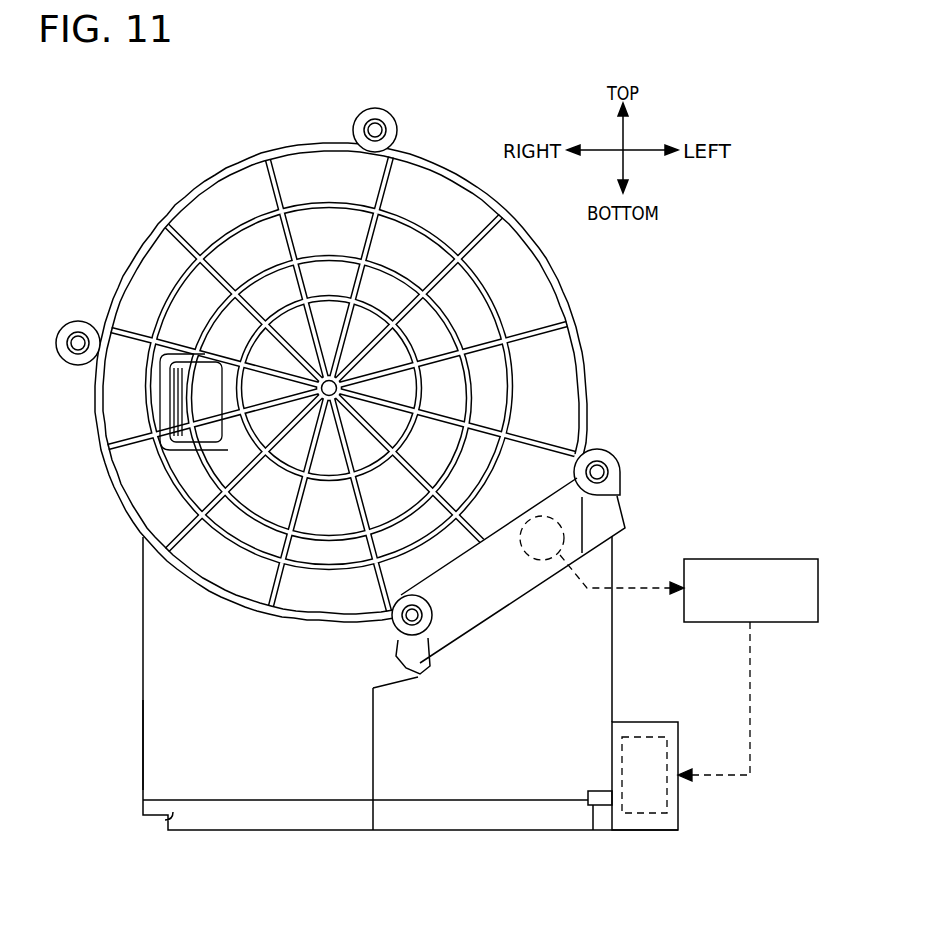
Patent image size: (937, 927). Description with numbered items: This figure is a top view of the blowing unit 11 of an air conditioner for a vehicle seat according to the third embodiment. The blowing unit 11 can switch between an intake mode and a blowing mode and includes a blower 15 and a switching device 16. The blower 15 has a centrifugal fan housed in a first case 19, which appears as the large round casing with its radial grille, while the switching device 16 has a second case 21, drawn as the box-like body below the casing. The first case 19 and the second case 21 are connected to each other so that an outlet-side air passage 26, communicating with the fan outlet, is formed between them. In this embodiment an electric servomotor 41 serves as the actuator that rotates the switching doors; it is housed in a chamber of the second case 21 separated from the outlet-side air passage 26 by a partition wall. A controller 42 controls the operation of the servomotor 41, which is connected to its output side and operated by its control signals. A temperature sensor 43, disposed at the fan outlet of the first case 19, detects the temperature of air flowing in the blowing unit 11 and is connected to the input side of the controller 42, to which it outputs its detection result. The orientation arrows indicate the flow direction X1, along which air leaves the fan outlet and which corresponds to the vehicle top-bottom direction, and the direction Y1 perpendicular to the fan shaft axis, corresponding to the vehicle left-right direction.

The blowing unit 11 is at (199, 140).
The blower 15 is at (126, 258).
The first case 19 is at (103, 302).
The switching device 16 is at (143, 680).
The second case 21 is at (140, 738).
The outlet-side air passage 26 is at (537, 652).
The electric servomotor 41 is at (655, 722).
The controller 42 is at (775, 559).
The temperature sensor 43 is at (556, 522).
The flow direction X1 is at (624, 133).
The direction perpendicular to the axial direction Y1 is at (652, 152).